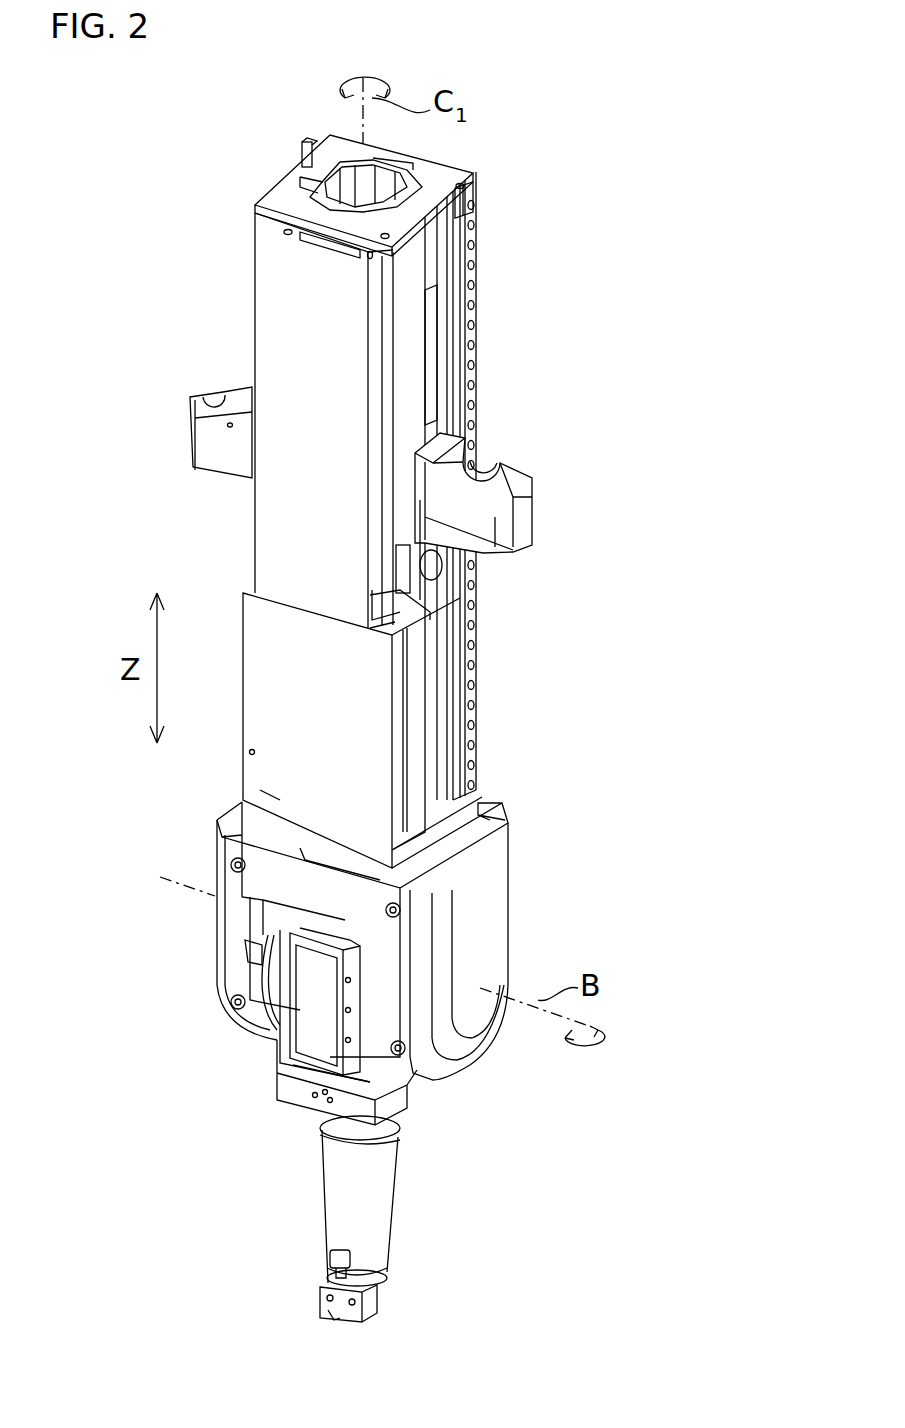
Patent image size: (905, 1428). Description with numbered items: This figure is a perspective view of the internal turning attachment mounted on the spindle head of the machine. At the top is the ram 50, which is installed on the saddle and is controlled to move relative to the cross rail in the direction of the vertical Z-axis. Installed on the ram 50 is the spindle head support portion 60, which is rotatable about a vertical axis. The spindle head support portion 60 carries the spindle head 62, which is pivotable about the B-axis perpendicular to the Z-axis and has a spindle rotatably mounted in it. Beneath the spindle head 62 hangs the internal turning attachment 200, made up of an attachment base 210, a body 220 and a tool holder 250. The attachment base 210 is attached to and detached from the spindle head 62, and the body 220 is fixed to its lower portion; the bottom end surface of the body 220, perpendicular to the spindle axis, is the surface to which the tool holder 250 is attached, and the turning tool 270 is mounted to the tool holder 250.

The ram 50 is at (297, 313).
The spindle head support portion 60 is at (487, 937).
The spindle head 62 is at (316, 1012).
The internal turning attachment 200 is at (112, 1117).
The attachment base 210 is at (288, 1097).
The body 220 is at (347, 1187).
The tool holder 250 is at (327, 1287).
The turning tool 270 is at (340, 1313).